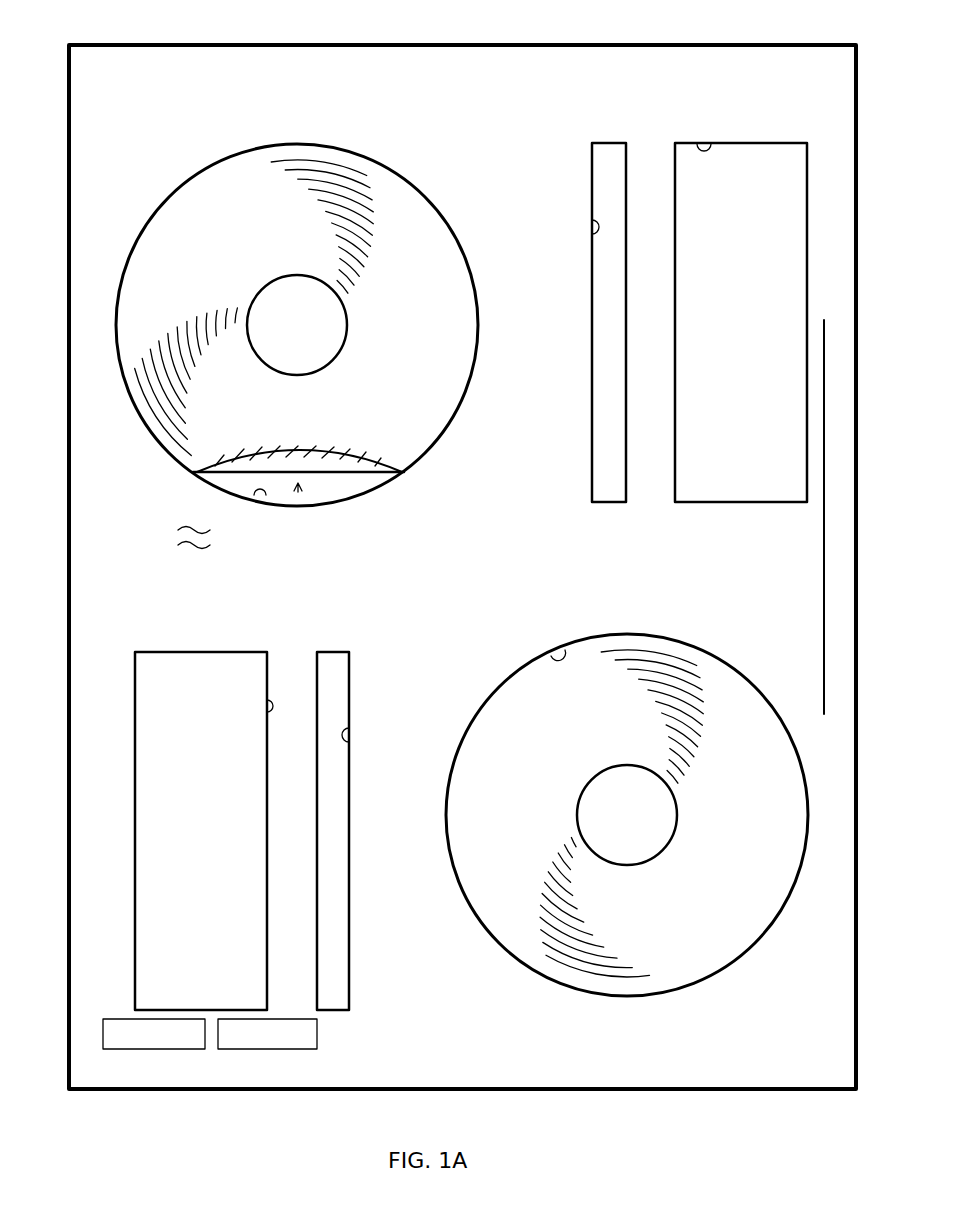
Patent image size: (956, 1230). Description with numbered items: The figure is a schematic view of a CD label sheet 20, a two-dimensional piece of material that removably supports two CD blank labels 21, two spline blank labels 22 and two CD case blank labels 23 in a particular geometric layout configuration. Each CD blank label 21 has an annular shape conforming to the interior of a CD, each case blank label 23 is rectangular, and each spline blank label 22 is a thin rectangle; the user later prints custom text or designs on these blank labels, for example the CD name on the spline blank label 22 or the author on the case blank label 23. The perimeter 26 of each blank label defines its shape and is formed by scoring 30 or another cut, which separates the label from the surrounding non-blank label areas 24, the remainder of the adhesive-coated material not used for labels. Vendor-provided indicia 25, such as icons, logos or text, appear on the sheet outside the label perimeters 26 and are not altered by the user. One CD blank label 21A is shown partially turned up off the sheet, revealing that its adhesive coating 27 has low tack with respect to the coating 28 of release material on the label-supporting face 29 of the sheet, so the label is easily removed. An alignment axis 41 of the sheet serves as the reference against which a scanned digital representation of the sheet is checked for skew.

The CD label sheet 20 is at (598, 26).
The CD blank label 21 is at (400, 198).
The CD blank label 21A is at (190, 455).
The spline blank label 22 is at (605, 438).
The CD case blank label 23 is at (705, 490).
The non-blank label area 24 is at (203, 545).
The indicia 25 is at (315, 87).
The perimeter 26 is at (462, 554).
The adhesive coating 27 is at (314, 452).
The coating of release material 28 is at (369, 481).
The label-supporting face 29 is at (299, 494).
The scoring 30 is at (262, 500).
The alignment axis 41 is at (823, 568).